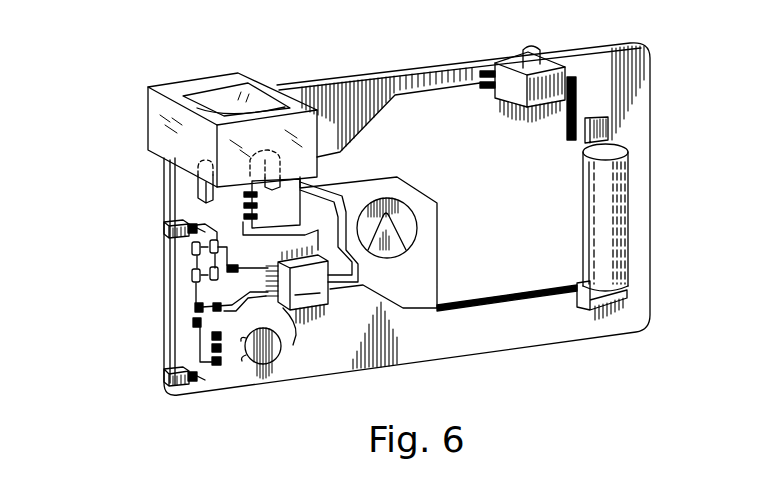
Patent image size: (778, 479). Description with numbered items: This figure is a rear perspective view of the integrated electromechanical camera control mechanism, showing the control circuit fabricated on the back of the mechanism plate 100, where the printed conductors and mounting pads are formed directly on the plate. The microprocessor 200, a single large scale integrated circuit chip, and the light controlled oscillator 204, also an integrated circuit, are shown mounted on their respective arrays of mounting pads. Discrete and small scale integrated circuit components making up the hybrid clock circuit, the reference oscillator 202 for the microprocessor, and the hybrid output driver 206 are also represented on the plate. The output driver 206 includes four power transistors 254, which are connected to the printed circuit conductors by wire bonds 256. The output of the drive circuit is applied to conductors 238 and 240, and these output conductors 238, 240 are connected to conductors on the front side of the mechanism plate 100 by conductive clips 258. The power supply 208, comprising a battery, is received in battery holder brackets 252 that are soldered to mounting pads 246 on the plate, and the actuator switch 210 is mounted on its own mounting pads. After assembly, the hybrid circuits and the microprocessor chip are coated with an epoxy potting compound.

The mechanism plate 100 is at (640, 88).
The microprocessor 200 is at (297, 285).
The reference oscillator 202 is at (282, 345).
The light controlled oscillator 204 is at (272, 203).
The output driver 206 is at (150, 278).
The power supply 208 is at (617, 212).
The actuator switch 210 is at (520, 62).
The output conductor 238 is at (185, 222).
The output conductor 240 is at (186, 377).
The mounting pads 246 is at (567, 140).
The battery holder brackets 252 is at (630, 142).
The power transistors 254 is at (192, 249).
The wire bonds 256 is at (200, 288).
The conductive clips 258 is at (160, 226).